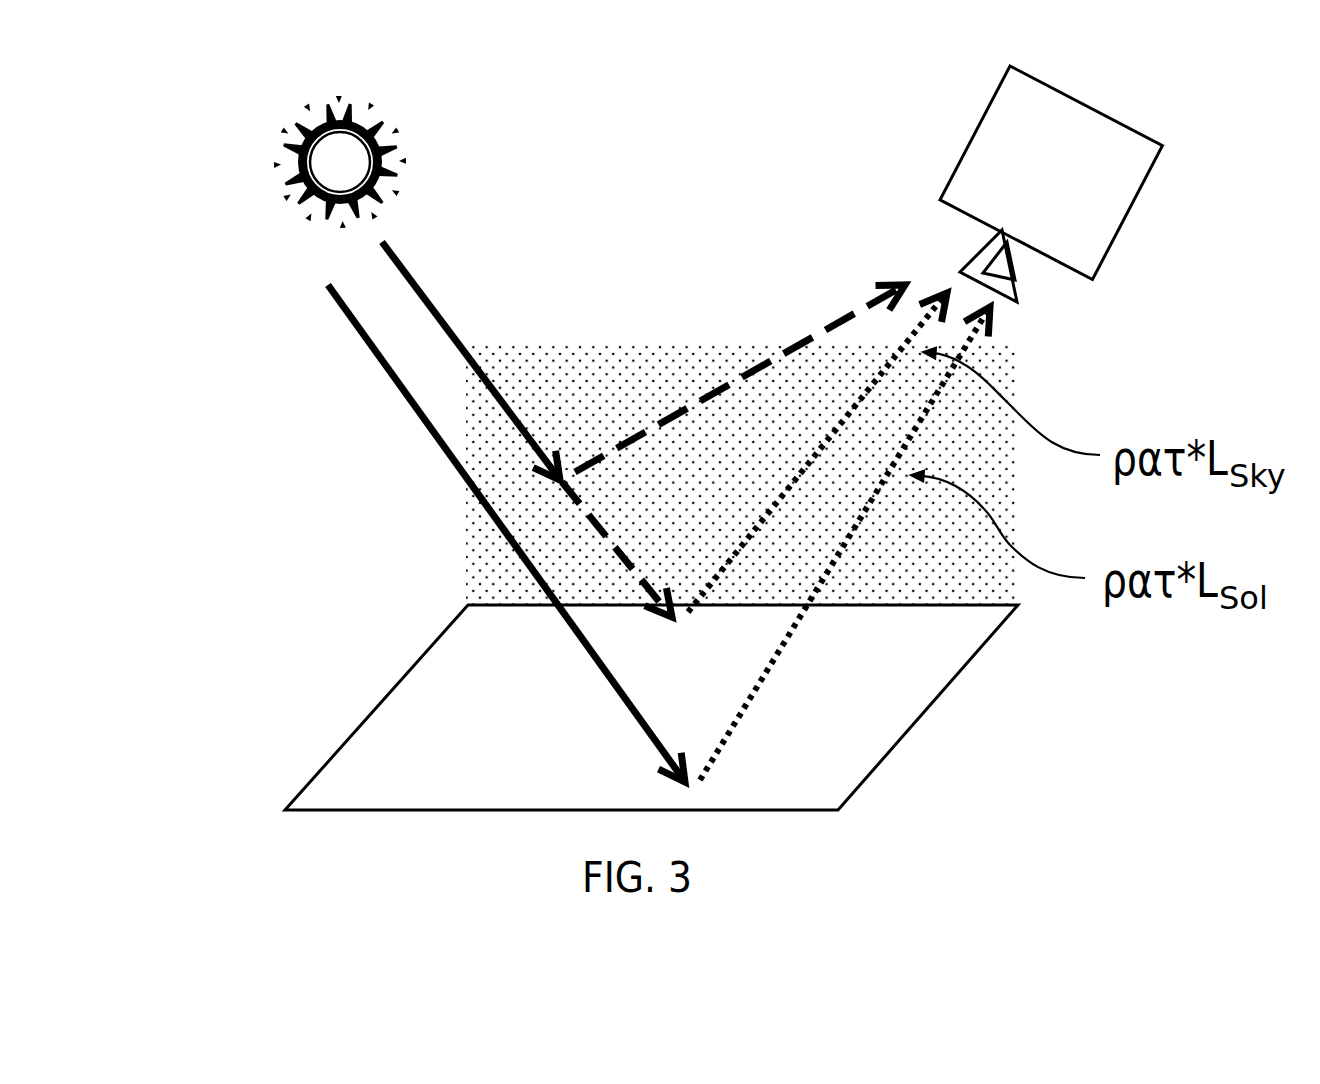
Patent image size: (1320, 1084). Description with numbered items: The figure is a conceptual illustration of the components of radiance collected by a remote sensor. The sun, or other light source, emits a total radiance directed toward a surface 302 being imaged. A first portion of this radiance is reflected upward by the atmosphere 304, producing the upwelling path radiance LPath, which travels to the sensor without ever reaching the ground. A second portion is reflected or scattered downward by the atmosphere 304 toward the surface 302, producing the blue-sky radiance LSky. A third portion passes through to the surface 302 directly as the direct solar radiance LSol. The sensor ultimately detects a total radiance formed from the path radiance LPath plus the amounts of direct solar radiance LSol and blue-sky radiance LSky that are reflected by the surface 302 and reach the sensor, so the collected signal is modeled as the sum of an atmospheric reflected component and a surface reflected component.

The surface 302 is at (612, 340).
The atmosphere 304 is at (967, 131).
The direct solar radiance LSol is at (383, 430).
The upwelling path radiance LPath is at (752, 340).
The blue-sky radiance LSky is at (575, 565).